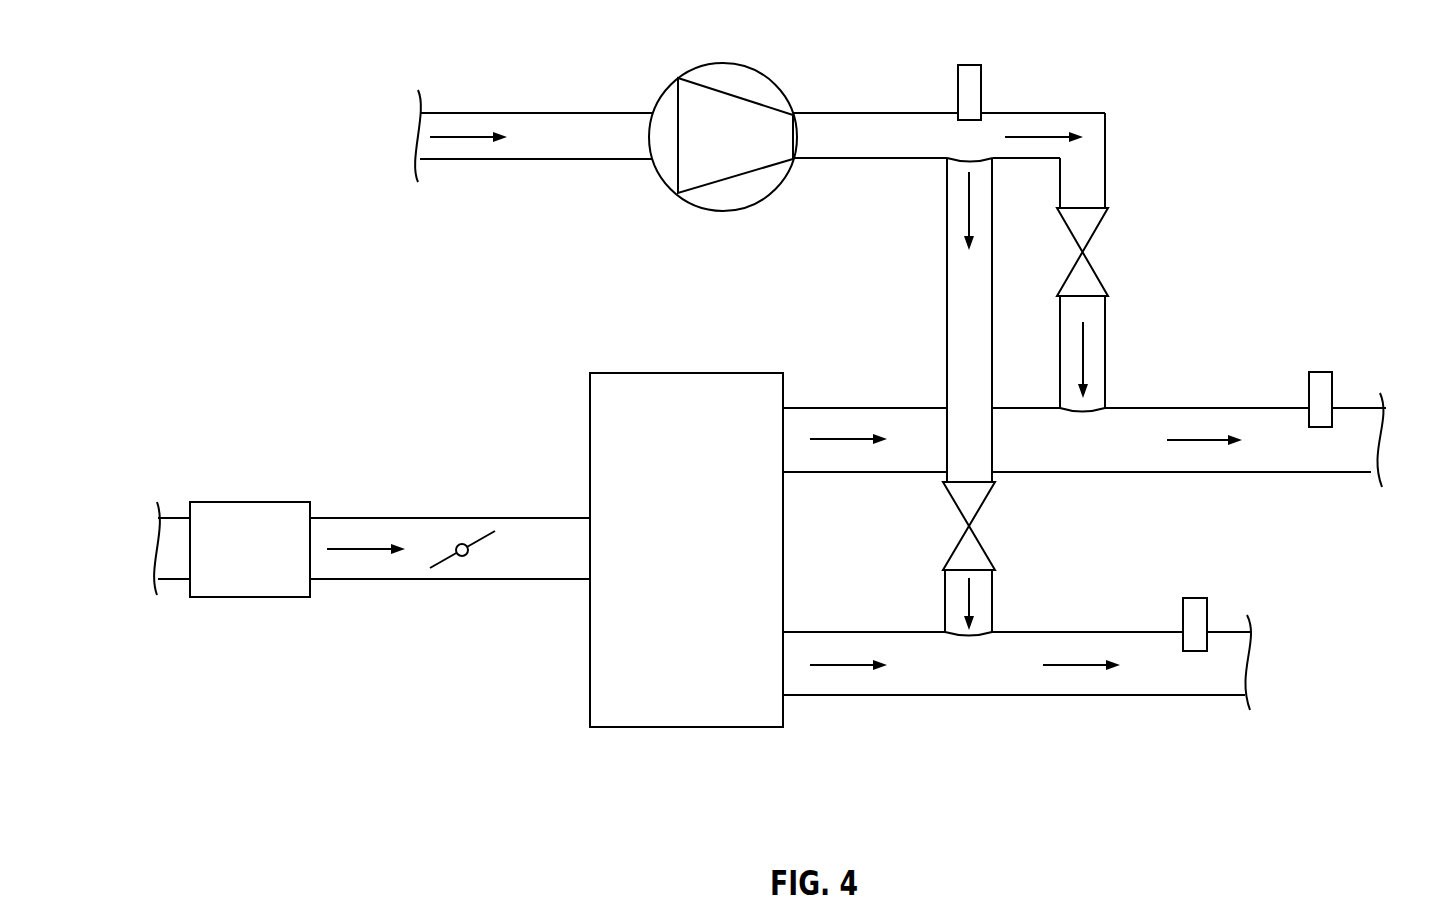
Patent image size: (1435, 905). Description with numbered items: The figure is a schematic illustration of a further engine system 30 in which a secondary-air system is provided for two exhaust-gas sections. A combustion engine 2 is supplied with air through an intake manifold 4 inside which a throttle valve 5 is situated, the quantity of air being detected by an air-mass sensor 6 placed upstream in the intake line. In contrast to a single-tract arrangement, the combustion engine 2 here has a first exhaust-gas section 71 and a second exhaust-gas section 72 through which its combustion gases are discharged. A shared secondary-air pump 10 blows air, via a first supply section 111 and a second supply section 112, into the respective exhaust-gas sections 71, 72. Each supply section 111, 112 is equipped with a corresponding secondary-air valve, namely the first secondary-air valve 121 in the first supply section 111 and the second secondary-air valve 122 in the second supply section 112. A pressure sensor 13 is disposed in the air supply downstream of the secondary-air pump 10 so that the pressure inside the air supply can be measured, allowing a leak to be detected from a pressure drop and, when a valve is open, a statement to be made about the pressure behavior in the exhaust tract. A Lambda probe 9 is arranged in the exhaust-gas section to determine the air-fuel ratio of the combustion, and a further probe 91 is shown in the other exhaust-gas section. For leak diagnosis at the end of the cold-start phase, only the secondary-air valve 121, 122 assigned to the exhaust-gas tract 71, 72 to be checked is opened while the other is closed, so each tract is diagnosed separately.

The combustion engine 2 is at (640, 380).
The intake manifold 4 is at (493, 565).
The throttle valve 5 is at (448, 560).
The air-mass sensor 6 is at (260, 510).
The Lambda probe 9 is at (1195, 603).
The secondary-air pump 10 is at (727, 72).
The pressure sensor 13 is at (968, 72).
The engine system 30 is at (1157, 108).
The first exhaust-gas section 71 is at (1287, 455).
The second exhaust-gas section 72 is at (1188, 683).
The sensor in exhaust line 71 91 is at (1320, 378).
The first supply section 111 is at (1093, 180).
The second supply section 112 is at (957, 311).
The first secondary-air valve 121 is at (1090, 282).
The second secondary-air valve 122 is at (970, 558).